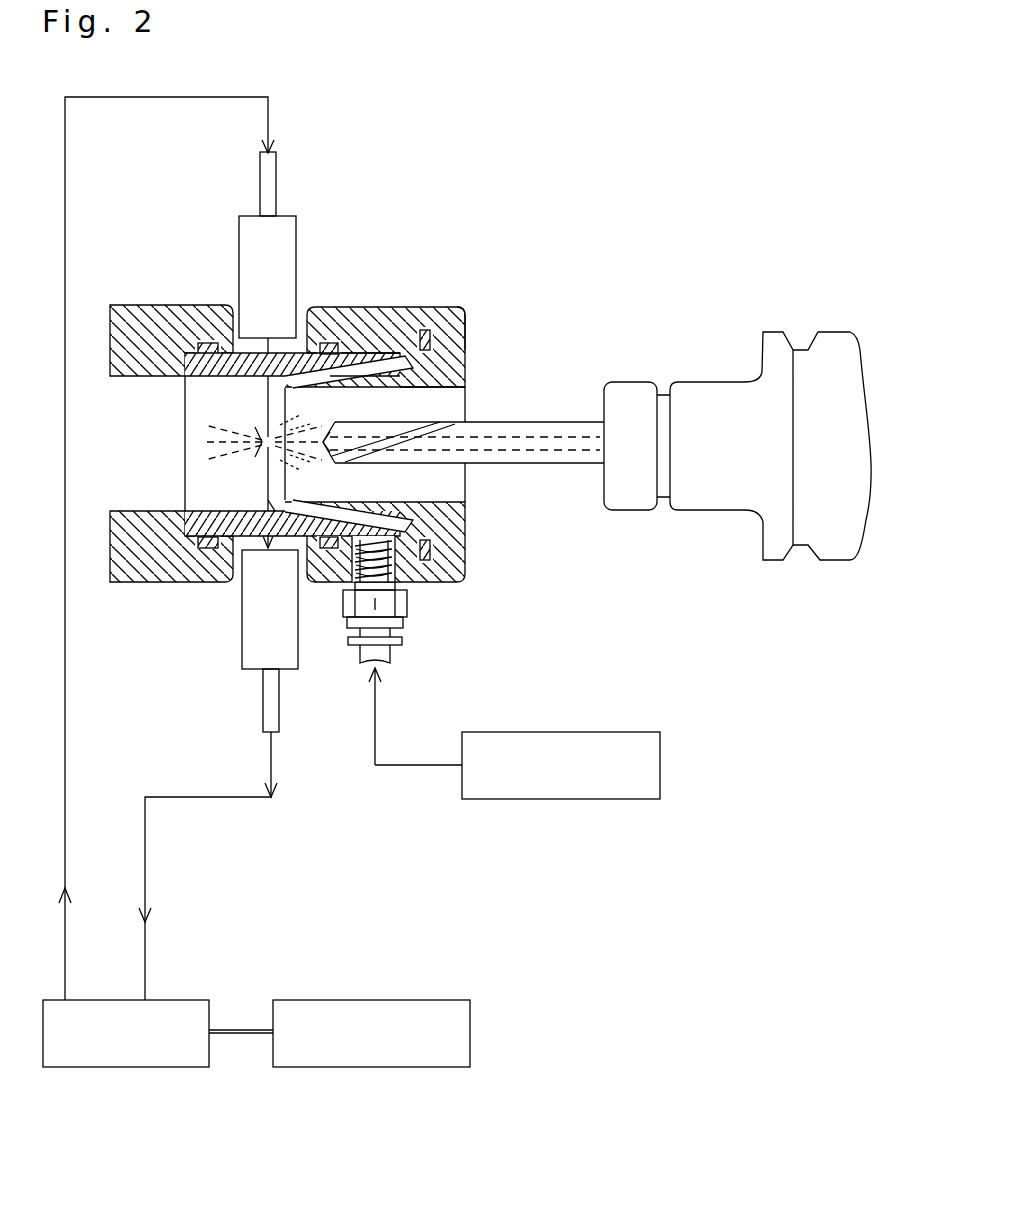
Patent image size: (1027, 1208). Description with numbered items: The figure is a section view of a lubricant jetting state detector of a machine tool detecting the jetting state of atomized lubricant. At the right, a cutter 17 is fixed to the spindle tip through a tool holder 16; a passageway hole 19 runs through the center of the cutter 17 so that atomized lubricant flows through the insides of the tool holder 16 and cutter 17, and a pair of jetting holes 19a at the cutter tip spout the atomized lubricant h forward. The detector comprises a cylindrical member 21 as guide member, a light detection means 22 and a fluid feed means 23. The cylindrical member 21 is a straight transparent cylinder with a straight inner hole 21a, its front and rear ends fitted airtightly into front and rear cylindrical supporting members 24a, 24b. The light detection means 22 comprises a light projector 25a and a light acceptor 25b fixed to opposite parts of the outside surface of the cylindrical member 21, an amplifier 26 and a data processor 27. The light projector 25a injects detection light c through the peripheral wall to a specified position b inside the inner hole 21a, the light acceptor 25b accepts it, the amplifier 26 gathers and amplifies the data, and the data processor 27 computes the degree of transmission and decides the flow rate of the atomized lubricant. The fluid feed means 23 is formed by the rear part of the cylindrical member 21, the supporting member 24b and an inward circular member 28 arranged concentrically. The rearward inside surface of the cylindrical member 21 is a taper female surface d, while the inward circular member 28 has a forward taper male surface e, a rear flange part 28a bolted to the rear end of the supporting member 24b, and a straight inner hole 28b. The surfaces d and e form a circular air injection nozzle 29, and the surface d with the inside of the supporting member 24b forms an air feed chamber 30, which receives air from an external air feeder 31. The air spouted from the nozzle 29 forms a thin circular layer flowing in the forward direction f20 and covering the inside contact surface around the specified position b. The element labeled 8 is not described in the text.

The tool holder 16 is at (725, 386).
The cutter 17 is at (522, 456).
The passageway hole 19 is at (545, 435).
The jetting hole 19a is at (328, 428).
The cylindrical member 21 is at (230, 350).
The inner hole 21a is at (210, 511).
The light detection means 22 is at (296, 1093).
The fluid feed means 23 is at (410, 770).
The front cylindrical supporting member 24a is at (152, 305).
The rear cylindrical supporting member 24b is at (358, 372).
The light projector 25a is at (288, 228).
The light acceptor 25b is at (246, 653).
The amplifier 26 is at (124, 1067).
The data processor 27 is at (376, 1067).
The inward circular member 28 is at (472, 336).
The flange part 28a is at (462, 560).
The inner hole 28b is at (438, 385).
The air injection nozzle 29 is at (290, 538).
The air feed chamber 30 is at (383, 358).
The air feeder 31 is at (570, 800).
The screw 8 is at (372, 560).
The specified position b is at (262, 440).
The detection light c is at (268, 498).
The taper female surface d is at (335, 370).
The taper male surface e is at (338, 352).
The atomized lubricant h is at (198, 440).
The forward direction f20 is at (618, 150).